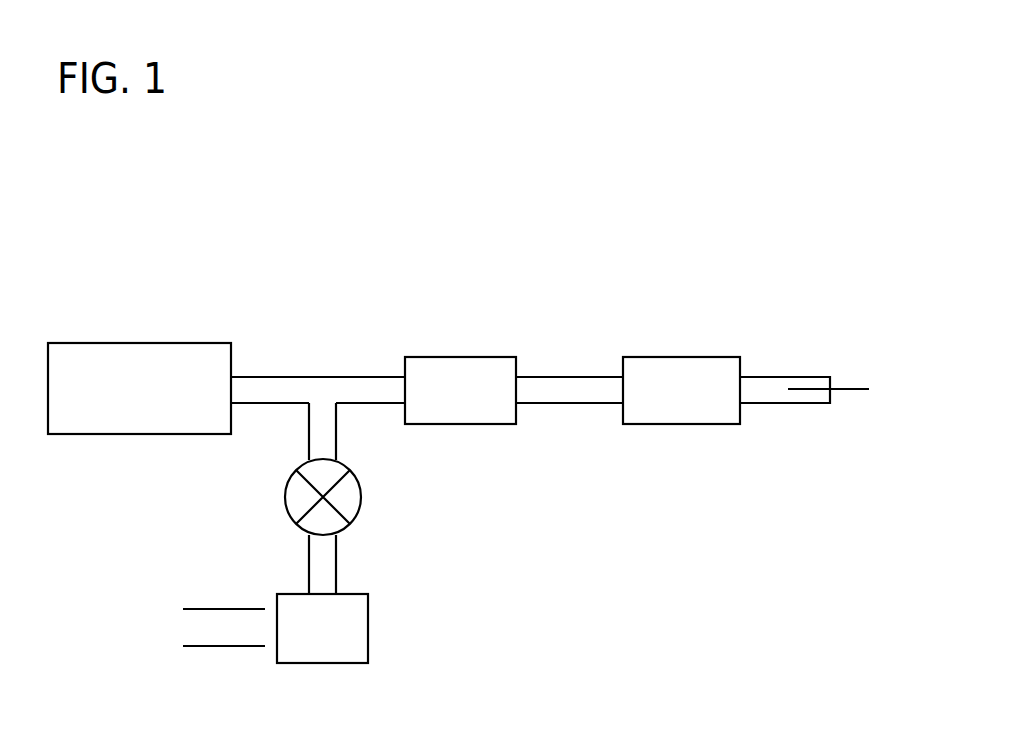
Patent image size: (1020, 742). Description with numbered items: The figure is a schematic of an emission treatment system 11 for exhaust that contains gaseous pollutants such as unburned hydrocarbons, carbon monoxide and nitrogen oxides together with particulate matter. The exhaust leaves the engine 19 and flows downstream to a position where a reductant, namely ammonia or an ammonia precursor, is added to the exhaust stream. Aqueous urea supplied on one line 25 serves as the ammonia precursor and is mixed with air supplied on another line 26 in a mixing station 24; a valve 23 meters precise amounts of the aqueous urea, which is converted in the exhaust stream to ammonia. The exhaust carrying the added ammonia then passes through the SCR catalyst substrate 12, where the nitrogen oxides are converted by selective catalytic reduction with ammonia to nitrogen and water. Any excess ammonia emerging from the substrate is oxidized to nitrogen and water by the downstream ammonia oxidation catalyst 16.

The emission treatment system 11 is at (602, 577).
The SCR catalyst substrate 12 is at (472, 357).
The ammonia oxidation catalyst 16 is at (700, 357).
The engine 19 is at (168, 343).
The valve 23 is at (361, 490).
The mixing station 24 is at (368, 625).
The line 25 is at (203, 646).
The line 26 is at (205, 609).